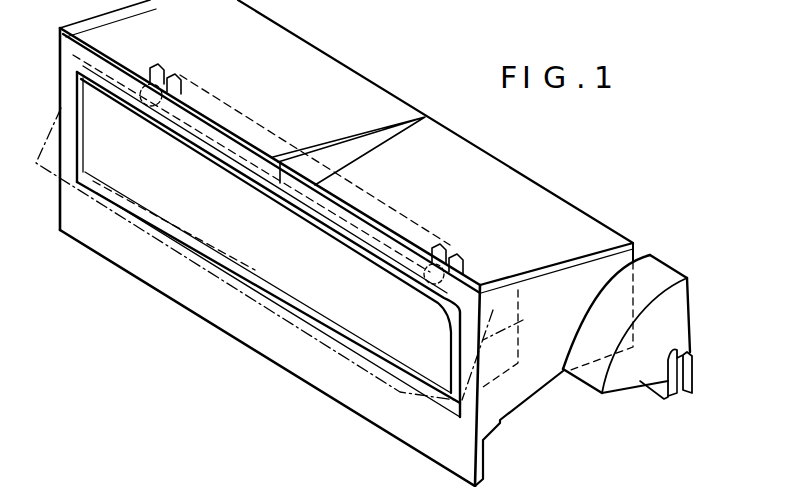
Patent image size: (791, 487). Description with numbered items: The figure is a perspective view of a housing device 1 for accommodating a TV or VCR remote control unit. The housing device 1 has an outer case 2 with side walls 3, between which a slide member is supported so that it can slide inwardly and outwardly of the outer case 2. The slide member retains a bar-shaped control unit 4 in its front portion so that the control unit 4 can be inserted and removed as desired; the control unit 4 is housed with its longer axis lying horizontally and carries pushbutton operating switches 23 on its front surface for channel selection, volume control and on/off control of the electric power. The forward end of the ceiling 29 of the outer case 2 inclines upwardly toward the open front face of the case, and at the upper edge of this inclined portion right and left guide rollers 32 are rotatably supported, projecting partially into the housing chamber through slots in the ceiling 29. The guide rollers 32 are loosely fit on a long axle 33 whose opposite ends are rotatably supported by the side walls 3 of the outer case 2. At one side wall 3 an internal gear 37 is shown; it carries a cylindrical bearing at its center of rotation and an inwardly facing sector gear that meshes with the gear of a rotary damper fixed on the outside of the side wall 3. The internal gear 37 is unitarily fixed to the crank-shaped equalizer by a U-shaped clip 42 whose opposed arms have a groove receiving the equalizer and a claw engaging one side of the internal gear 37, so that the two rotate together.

The housing device 1 is at (179, 338).
The outer case 2 is at (136, 260).
The side wall 3 is at (140, 12).
The control unit 4 is at (344, 308).
The pushbutton operating switches 23 is at (237, 258).
The ceiling 29 is at (340, 90).
The guide rollers 32 is at (165, 92).
The axle 33 is at (500, 317).
The internal gear 37 is at (663, 270).
The clip 42 is at (684, 394).